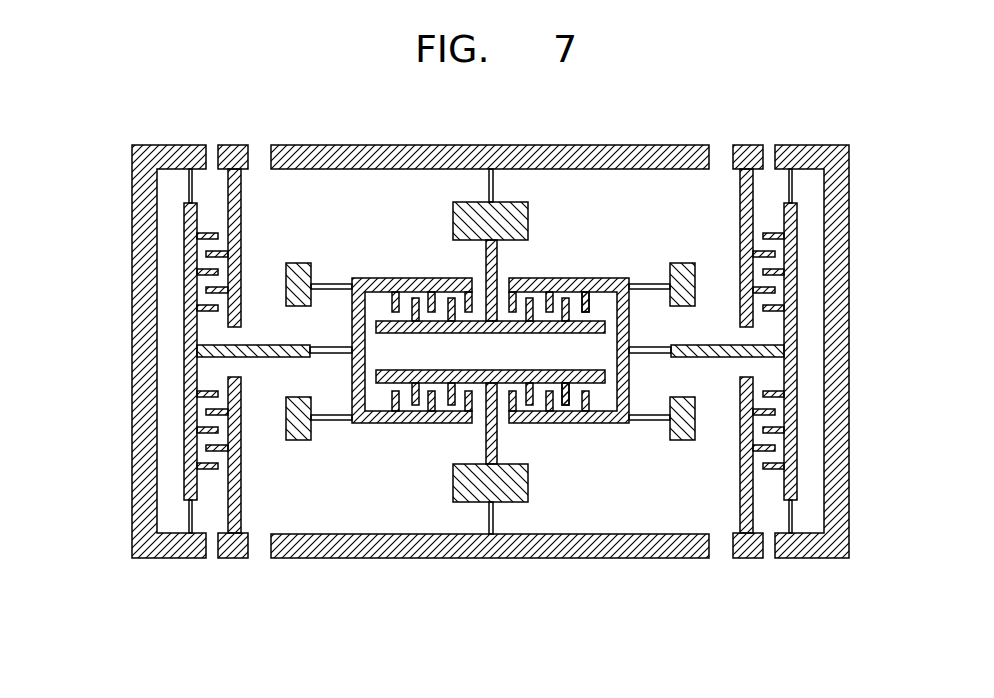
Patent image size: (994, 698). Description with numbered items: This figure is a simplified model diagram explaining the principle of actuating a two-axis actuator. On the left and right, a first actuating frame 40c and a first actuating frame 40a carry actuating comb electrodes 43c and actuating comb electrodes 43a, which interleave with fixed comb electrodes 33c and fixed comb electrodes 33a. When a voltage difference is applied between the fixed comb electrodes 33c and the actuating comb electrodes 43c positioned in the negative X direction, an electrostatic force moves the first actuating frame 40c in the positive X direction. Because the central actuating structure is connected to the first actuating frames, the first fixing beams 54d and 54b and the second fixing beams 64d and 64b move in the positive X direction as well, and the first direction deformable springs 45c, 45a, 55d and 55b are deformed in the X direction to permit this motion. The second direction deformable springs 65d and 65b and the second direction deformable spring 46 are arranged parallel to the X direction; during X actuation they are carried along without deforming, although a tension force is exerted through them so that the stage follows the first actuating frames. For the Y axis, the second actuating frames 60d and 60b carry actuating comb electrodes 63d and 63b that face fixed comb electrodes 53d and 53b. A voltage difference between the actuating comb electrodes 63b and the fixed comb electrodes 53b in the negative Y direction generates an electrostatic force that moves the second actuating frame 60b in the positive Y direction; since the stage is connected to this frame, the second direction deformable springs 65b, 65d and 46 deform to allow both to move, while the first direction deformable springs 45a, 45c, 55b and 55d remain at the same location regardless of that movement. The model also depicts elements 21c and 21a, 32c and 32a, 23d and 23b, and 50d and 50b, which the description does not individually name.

The left frame 21c is at (136, 265).
The right frame 21a is at (847, 354).
The left anchor 32c is at (234, 558).
The right anchor 32a is at (756, 182).
The fixed comb electrodes 33c is at (226, 447).
The fixed comb electrodes 33a is at (770, 255).
The first actuating frame 40c is at (192, 311).
The first actuating frame 40a is at (797, 281).
The actuating comb electrodes 43c is at (216, 393).
The actuating comb electrodes 43a is at (770, 309).
The first direction deformable spring 45c is at (191, 513).
The first direction deformable spring 45a is at (792, 515).
The upper fixed bar 23d is at (381, 145).
The lower fixed bar 23b is at (443, 558).
The second fixing beam 64d is at (293, 262).
The second fixing beam 64b is at (297, 440).
The second direction deformable spring 65d is at (335, 283).
The second direction deformable spring 65b is at (328, 420).
The second direction deformable spring 46 is at (643, 347).
The actuating comb electrodes 63d is at (442, 278).
The actuating comb electrodes 63b is at (430, 423).
The second actuating frame 60d is at (407, 278).
The second actuating frame 60b is at (392, 423).
The upper fixed comb fingers 50d is at (552, 316).
The lower fixed comb fingers 50b is at (551, 392).
The fixed comb electrodes 53d is at (583, 300).
The fixed comb electrodes 53b is at (566, 392).
The first fixing beam 54d is at (490, 221).
The first fixing beam 54b is at (466, 502).
The first direction deformable spring 55d is at (496, 168).
The first direction deformable spring 55b is at (500, 537).